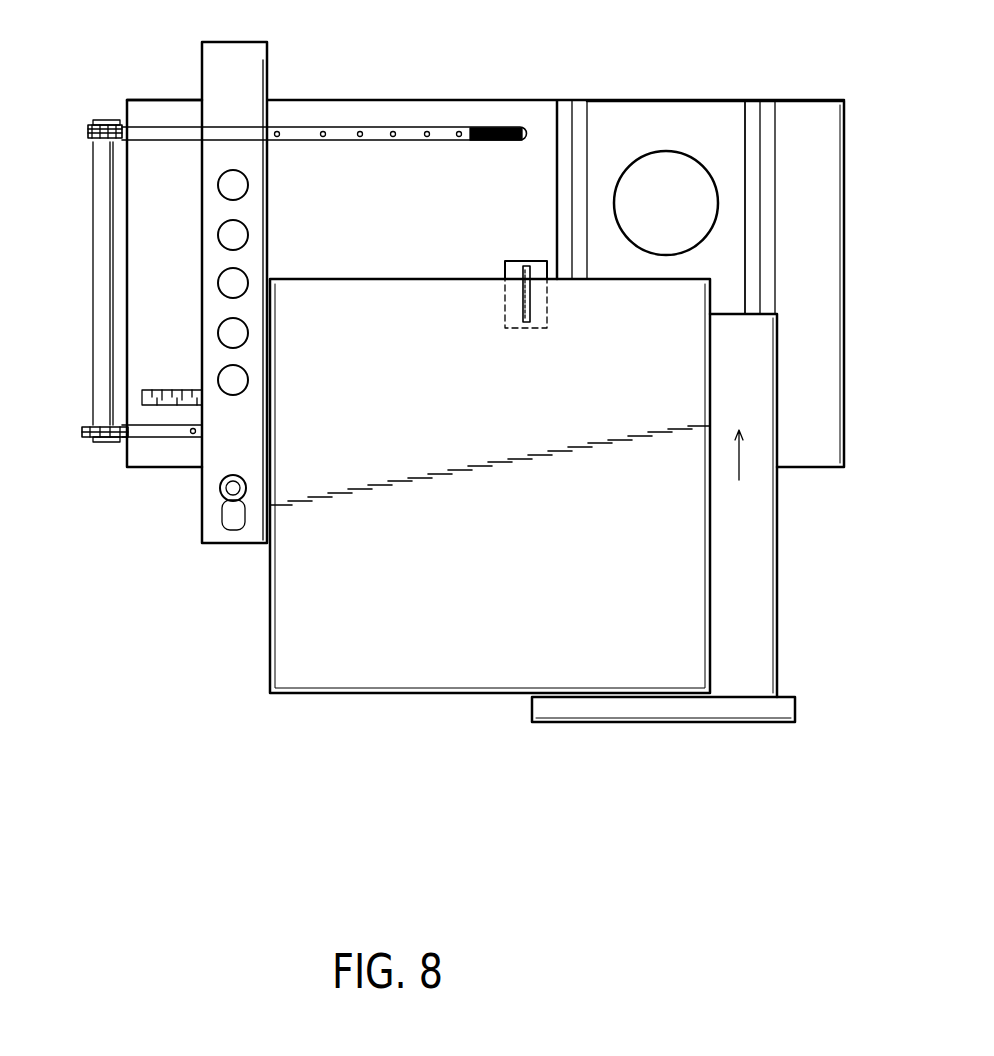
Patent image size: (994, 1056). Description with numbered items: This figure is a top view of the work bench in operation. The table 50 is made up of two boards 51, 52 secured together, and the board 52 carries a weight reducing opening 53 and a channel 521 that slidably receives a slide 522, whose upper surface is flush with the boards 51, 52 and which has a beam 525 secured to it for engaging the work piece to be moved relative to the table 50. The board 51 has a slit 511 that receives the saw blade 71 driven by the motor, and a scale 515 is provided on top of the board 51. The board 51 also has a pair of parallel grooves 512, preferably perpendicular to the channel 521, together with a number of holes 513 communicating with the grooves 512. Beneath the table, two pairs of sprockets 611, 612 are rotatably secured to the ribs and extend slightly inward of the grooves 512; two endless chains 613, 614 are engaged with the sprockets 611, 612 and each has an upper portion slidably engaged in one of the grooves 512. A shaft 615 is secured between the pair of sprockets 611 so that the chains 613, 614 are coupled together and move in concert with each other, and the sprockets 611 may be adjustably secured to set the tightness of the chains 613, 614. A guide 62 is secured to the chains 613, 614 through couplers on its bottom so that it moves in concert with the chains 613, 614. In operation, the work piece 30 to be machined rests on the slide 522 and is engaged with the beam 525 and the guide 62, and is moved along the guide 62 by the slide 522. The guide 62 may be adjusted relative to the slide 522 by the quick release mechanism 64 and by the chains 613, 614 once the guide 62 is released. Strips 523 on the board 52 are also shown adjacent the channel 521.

The work piece 30 is at (325, 700).
The table 50 is at (560, 98).
The board 51 is at (160, 110).
The board 52 is at (832, 258).
The weight reducing opening 53 is at (662, 182).
The guide 62 is at (232, 58).
The quick release mechanism 64 is at (225, 508).
The saw blade 71 is at (524, 298).
The slit 511 is at (528, 268).
The grooves 512 is at (405, 128).
The holes 513 is at (395, 128).
The scale 515 is at (172, 390).
The channel 521 is at (712, 115).
The slide 522 is at (760, 620).
The guide strips 523 is at (580, 118).
The beam 525 is at (720, 708).
The sprockets 611 is at (90, 127).
The sprockets 612 is at (500, 127).
The endless chain 613 is at (86, 427).
The endless chain 614 is at (105, 122).
The shaft 615 is at (98, 255).